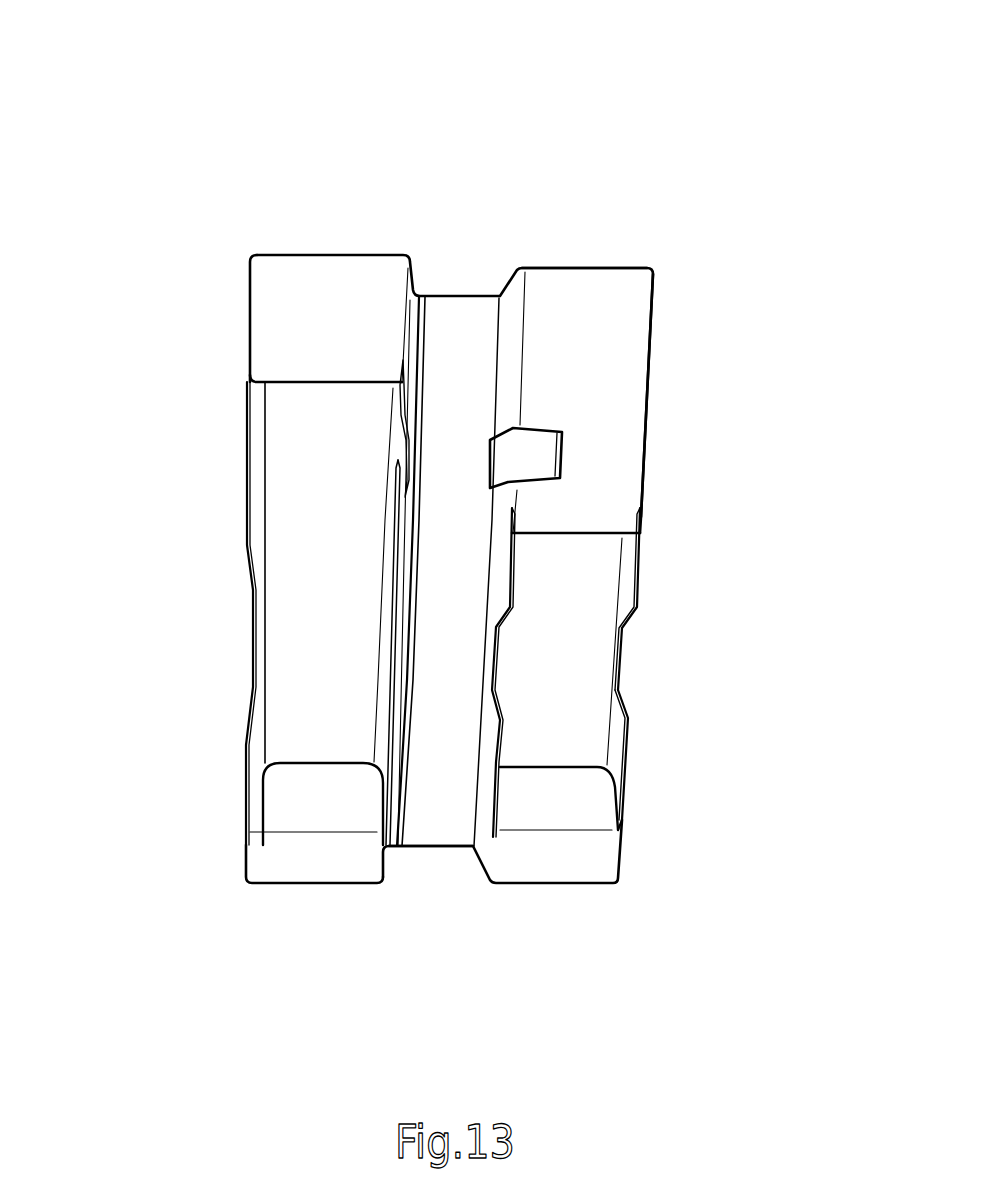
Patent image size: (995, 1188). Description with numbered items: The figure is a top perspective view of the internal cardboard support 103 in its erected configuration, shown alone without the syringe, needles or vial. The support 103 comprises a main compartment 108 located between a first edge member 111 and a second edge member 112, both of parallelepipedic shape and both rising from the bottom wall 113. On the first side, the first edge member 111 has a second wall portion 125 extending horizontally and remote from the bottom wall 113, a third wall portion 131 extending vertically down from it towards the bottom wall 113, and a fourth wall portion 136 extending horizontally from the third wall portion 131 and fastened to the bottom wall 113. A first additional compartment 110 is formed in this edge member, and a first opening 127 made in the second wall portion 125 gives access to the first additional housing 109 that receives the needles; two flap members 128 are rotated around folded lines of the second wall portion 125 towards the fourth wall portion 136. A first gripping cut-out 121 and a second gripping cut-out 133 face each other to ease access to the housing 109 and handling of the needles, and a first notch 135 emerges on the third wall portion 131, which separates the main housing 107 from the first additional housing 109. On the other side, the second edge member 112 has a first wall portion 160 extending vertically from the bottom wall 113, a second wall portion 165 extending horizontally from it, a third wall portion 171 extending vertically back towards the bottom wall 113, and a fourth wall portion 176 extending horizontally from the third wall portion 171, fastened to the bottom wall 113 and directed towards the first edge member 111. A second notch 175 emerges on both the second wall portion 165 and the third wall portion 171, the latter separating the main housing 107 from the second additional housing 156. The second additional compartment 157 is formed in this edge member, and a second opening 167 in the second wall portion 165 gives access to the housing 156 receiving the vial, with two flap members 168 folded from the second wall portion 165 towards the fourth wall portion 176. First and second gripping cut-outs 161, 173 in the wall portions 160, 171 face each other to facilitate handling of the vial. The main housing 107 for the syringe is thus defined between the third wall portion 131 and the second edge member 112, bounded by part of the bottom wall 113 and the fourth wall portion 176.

The internal cardboard support 103 is at (182, 172).
The main housing 107 is at (439, 683).
The main compartment 108 is at (427, 848).
The first additional housing 109 is at (327, 588).
The first additional compartment 110 is at (302, 518).
The first edge member 111 is at (305, 255).
The second edge member 112 is at (585, 268).
The bottom wall 113 is at (578, 690).
The first gripping cut-out 121 is at (386, 652).
The second wall portion 125 is at (293, 322).
The first opening 127 is at (290, 716).
The flap members 128 is at (297, 803).
The third wall portion 131 is at (410, 322).
The second gripping cut-out 133 is at (386, 660).
The first notch 135 is at (380, 453).
The fourth wall portion 136 is at (345, 432).
The second additional housing 156 is at (627, 713).
The second additional compartment 157 is at (593, 568).
The first wall portion 160 is at (617, 737).
The first gripping cut-out 161 is at (625, 655).
The second wall portion 165 is at (622, 322).
The second opening 167 is at (555, 565).
The flap members 168 is at (570, 803).
The third wall portion 171 is at (512, 330).
The second gripping cut-out 173 is at (498, 655).
The second notch 175 is at (537, 452).
The fourth wall portion 176 is at (466, 622).